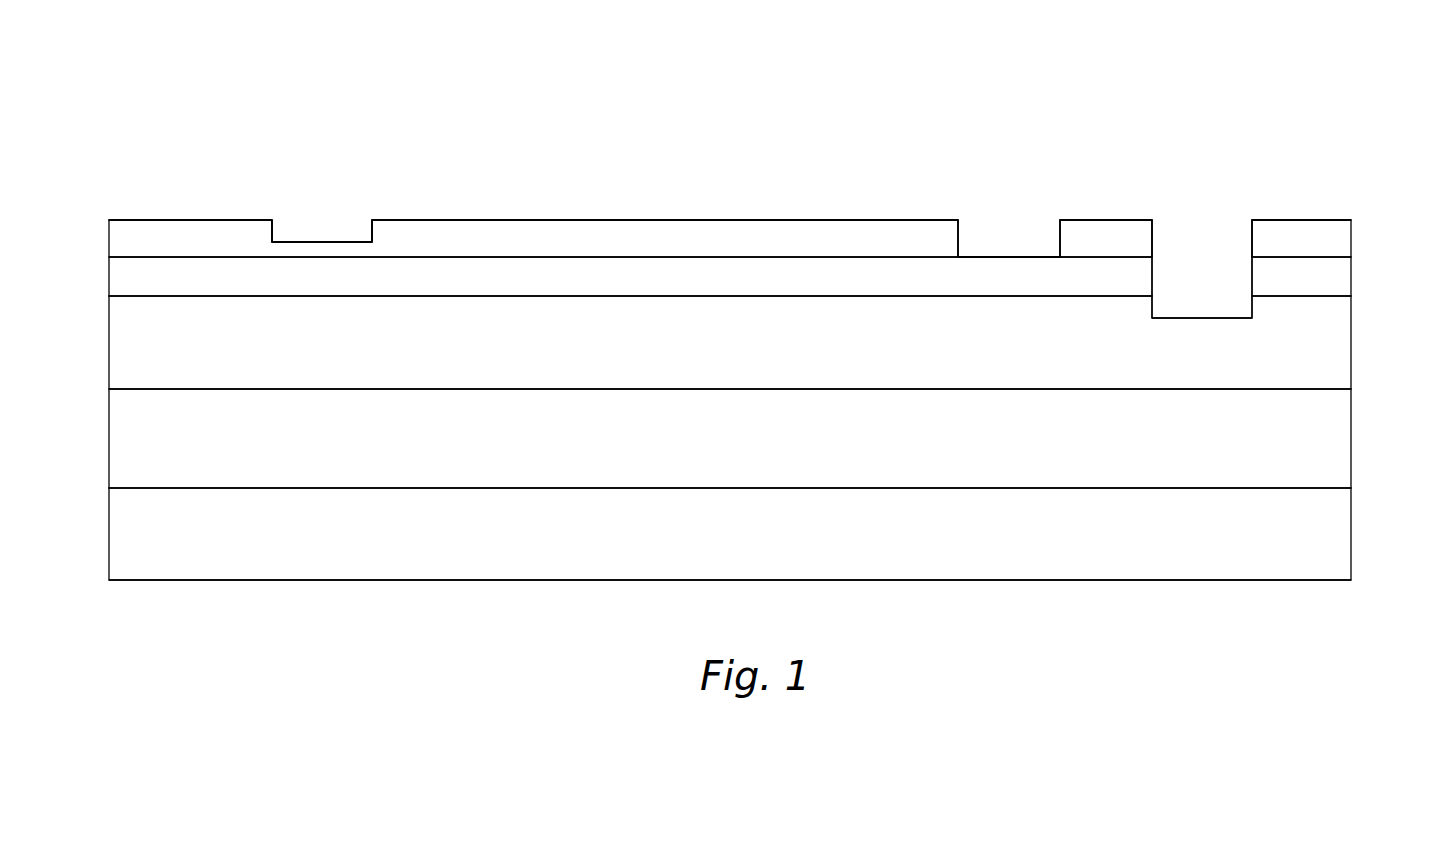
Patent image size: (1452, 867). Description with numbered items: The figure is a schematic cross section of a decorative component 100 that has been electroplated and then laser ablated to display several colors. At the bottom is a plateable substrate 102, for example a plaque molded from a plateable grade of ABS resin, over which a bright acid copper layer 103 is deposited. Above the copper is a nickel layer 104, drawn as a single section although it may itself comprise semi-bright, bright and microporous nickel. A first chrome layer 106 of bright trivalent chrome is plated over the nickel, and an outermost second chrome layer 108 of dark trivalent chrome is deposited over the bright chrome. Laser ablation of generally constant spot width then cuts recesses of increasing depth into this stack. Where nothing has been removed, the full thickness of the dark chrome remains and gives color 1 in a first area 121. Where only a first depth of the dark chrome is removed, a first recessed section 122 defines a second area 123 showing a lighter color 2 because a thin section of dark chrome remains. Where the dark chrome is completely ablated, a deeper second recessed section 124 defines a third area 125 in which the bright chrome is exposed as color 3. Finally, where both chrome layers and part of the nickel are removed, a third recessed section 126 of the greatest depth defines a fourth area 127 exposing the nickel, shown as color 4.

The component 100 is at (754, 104).
The plateable substrate 102 is at (1351, 535).
The bright acid copper layer 103 is at (1351, 431).
The nickel layer 104 is at (1351, 341).
The first chrome layer 106 is at (1351, 272).
The second chrome layer 108 is at (1351, 238).
The first area 121 is at (163, 220).
The first recessed section 122 is at (317, 148).
The second area 123 is at (322, 242).
The second recessed section 124 is at (945, 175).
The third area 125 is at (983, 257).
The third recessed section 126 is at (1157, 193).
The fourth area 127 is at (1180, 318).
The region/color 1 is at (240, 214).
The region/color 2 is at (348, 238).
The region/color 3 is at (1021, 253).
The region/color 4 is at (1226, 314).